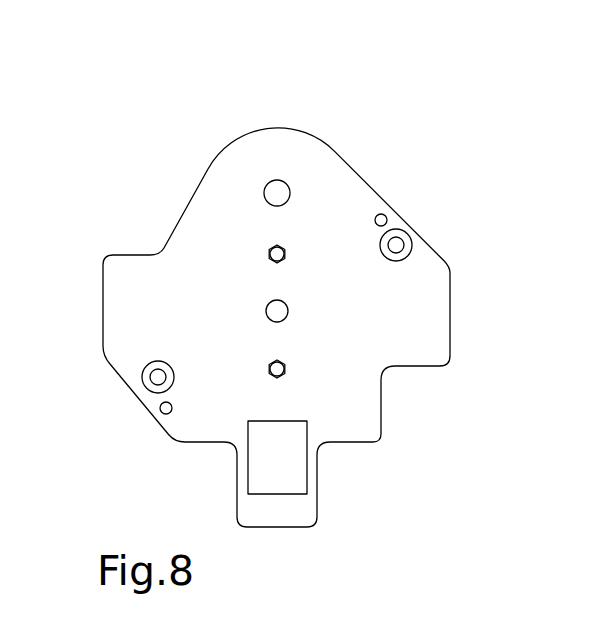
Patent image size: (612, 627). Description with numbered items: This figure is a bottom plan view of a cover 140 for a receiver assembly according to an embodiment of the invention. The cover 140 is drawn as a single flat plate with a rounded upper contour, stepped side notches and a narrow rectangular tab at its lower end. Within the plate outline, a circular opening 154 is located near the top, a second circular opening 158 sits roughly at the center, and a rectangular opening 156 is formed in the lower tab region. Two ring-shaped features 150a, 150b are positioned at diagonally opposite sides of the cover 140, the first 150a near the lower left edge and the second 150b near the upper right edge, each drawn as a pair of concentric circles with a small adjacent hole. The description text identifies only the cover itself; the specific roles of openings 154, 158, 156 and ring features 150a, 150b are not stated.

The cover 140 is at (315, 87).
The upper aperture 154 is at (258, 193).
The central aperture 158 is at (287, 319).
The first mounting hole with grommet 150a is at (137, 378).
The second mounting hole with grommet 150b is at (413, 233).
The rectangular opening 156 is at (309, 495).